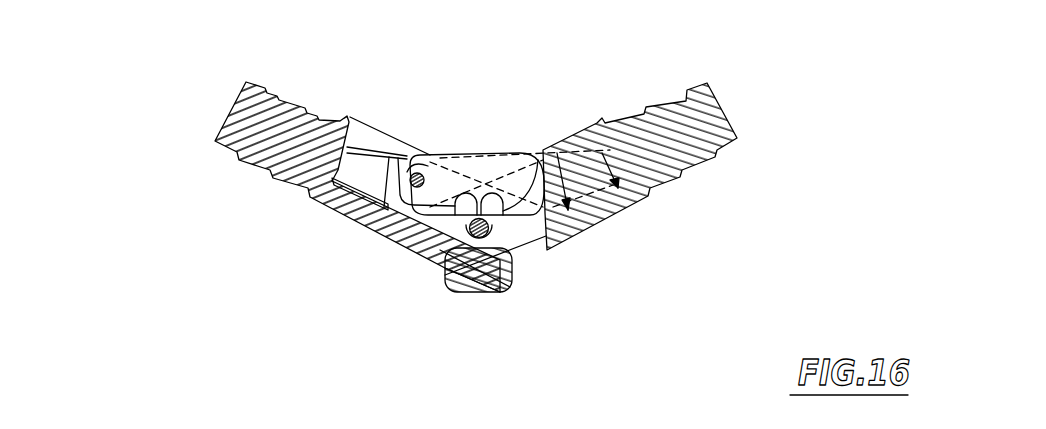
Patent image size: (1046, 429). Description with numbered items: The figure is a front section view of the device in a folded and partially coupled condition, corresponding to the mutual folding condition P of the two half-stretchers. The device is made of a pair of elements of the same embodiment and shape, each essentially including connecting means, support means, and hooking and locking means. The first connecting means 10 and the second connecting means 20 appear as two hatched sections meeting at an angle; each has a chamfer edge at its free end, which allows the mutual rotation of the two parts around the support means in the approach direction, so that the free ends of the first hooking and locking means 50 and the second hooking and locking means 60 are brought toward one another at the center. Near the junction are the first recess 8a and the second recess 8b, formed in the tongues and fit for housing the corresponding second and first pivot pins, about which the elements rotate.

The mutual folding condition P is at (404, 197).
The first connecting means 10 is at (674, 202).
The second connecting means 20 is at (249, 217).
The first hooking and locking means 50 is at (514, 197).
The second hooking and locking means 60 is at (400, 197).
The first recess 8a is at (468, 233).
The second recess 8b is at (497, 232).